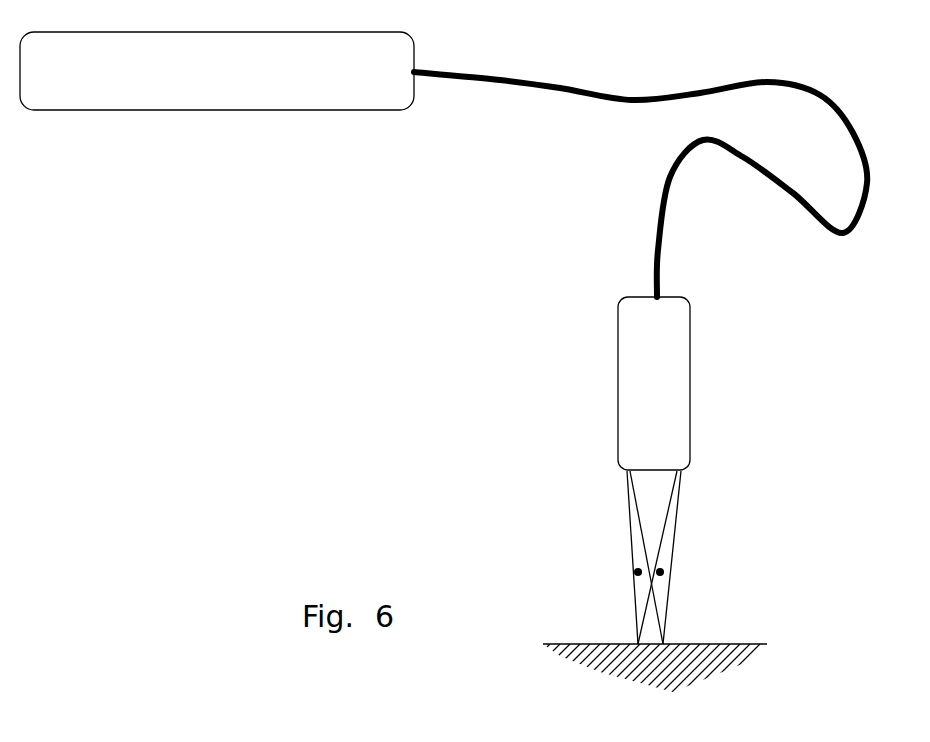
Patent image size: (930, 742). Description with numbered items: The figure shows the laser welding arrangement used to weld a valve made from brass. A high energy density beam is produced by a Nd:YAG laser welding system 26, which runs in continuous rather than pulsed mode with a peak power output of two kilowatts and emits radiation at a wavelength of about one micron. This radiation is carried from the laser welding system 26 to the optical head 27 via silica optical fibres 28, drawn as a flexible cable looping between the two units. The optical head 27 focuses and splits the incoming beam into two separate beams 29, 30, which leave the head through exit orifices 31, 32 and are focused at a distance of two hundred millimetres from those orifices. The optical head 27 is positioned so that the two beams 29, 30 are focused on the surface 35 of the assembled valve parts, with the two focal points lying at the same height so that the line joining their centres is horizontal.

The Nd:YAG laser welding system 26 is at (287, 72).
The optical head 27 is at (647, 388).
The silica optical fibres 28 is at (595, 108).
The first laser beam 29 is at (636, 571).
The second laser beam 30 is at (664, 571).
The first exit orifice 31 is at (620, 473).
The second exit orifice 32 is at (690, 472).
The surface of the assembled parts 35 is at (579, 636).